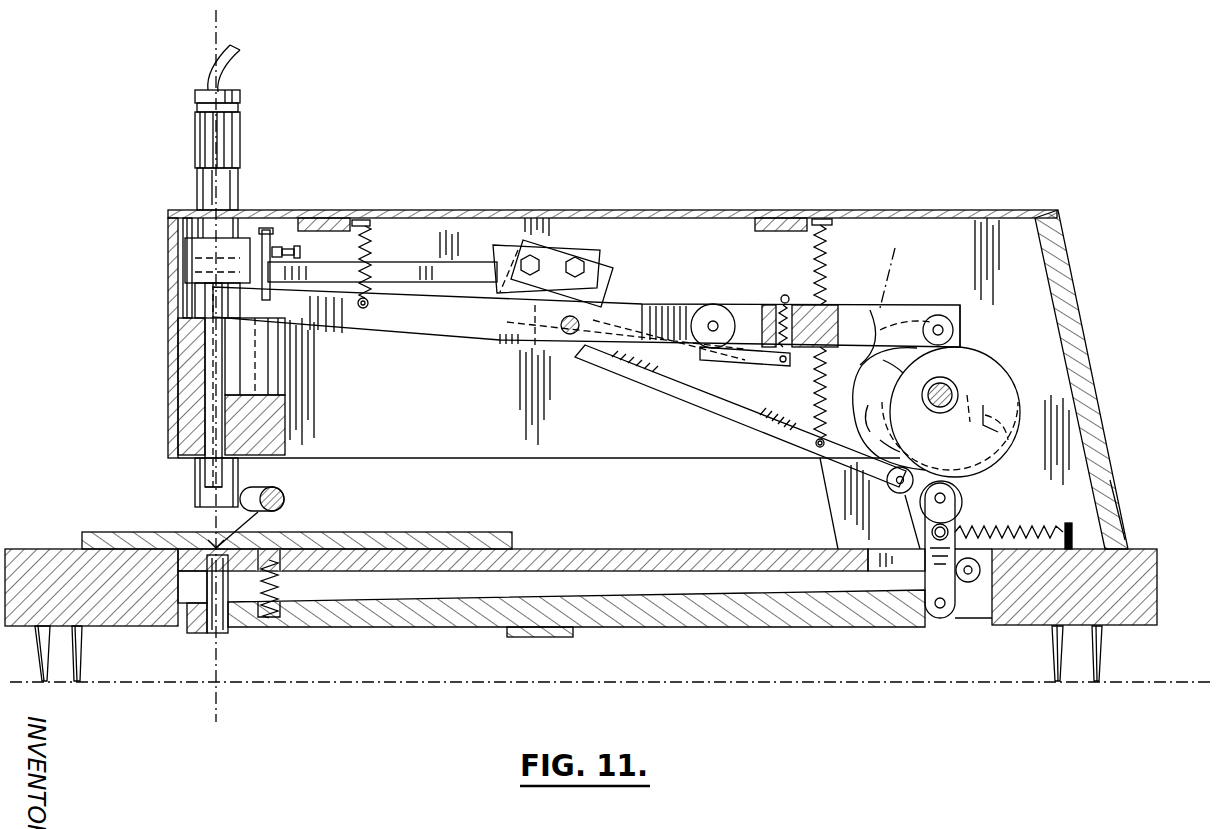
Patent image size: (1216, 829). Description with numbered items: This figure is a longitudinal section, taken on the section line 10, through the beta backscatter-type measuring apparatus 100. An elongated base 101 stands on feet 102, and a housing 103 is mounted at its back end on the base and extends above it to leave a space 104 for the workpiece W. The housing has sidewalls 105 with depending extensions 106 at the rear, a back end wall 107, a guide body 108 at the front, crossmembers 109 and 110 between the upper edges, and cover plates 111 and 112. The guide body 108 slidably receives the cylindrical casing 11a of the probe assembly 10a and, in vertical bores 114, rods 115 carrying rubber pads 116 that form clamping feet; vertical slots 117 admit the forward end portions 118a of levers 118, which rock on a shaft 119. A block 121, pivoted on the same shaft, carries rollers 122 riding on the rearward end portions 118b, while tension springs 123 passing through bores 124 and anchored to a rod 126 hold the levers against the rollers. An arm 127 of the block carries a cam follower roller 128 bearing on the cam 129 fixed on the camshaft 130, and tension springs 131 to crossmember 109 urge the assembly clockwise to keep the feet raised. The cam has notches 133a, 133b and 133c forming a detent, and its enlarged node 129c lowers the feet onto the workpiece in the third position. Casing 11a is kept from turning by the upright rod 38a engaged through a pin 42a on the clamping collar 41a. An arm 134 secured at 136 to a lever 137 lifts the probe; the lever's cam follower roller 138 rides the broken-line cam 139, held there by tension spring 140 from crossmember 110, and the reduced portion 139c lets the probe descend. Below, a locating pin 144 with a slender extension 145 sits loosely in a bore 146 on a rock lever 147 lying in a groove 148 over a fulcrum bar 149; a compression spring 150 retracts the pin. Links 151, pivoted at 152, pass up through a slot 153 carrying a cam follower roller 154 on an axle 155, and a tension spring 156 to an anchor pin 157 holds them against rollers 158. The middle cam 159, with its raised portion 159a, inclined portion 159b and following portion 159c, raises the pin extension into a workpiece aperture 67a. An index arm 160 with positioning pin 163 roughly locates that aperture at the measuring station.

The section line 10 is at (197, 22).
The probe assembly 10a is at (248, 195).
The beta backscatter-type measuring apparatus 100 is at (1000, 138).
The base 101 is at (1152, 590).
The feet 102 is at (81, 665).
The housing 103 is at (1082, 272).
The space 104 is at (577, 500).
The sidewalls 105 is at (384, 456).
The depending extensions 106 is at (845, 495).
The back end wall 107 is at (1118, 510).
The guide body 108 is at (178, 370).
The crossmember 109 is at (328, 218).
The crossmember 110 is at (770, 218).
The cover plate 111 is at (562, 213).
The cover plate 112 is at (185, 265).
The vertical bores 114 is at (205, 432).
The rods 115 is at (178, 405).
The rubber pads 116 is at (195, 495).
The vertical slots 117 is at (250, 392).
The levers 118 is at (418, 322).
The forward end portions 118a is at (262, 318).
The rearward end portions 118b is at (712, 378).
The shaft 119 is at (572, 345).
The block 121 is at (645, 305).
The rollers 122 is at (714, 304).
The tension springs 123 is at (766, 305).
The bores 124 is at (800, 305).
The rod 126 is at (785, 366).
The arm 127 is at (895, 308).
The cam follower roller 128 is at (945, 318).
The cam 129 is at (972, 330).
The node 129c is at (889, 417).
The camshaft 130 is at (990, 352).
The tension springs 131 is at (372, 252).
The notch 133a is at (960, 372).
The notch 133b is at (1005, 400).
The notch 133c is at (900, 436).
The arm 134 is at (442, 262).
The securing point 136 is at (548, 262).
The lever 137 is at (640, 372).
The cam follower roller 138 is at (882, 500).
The cam 139 is at (950, 446).
The portion of cam 139c is at (1010, 425).
The tension spring 140 is at (828, 258).
The locating pin 144 is at (222, 635).
The reduced diameter extension 145 is at (205, 595).
The bore 146 is at (200, 582).
The rock lever 147 is at (395, 630).
The groove 148 is at (350, 608).
The fulcrum bar 149 is at (545, 637).
The compression spring 150 is at (280, 588).
The links 151 is at (930, 578).
The pivot 152 is at (940, 620).
The slot 153 is at (870, 548).
The cam follower roller 154 is at (962, 500).
The axle 155 is at (935, 517).
The tension spring 156 is at (1020, 524).
The anchor pin 157 is at (1080, 514).
The rollers 158 is at (972, 582).
The cam 159 is at (841, 430).
The peripheral portion 159a is at (816, 408).
The inclined peripheral portion 159b is at (848, 305).
The peripheral portion 159c is at (904, 269).
The horizontal arm 160 is at (275, 495).
The positioning pin 163 is at (245, 518).
The cylindrical casing 11a is at (195, 472).
The upright rod 38a is at (252, 292).
The clamping collar 41a is at (262, 290).
The pin 42a is at (302, 252).
The aperture 67a is at (212, 535).
The workpiece W is at (466, 532).